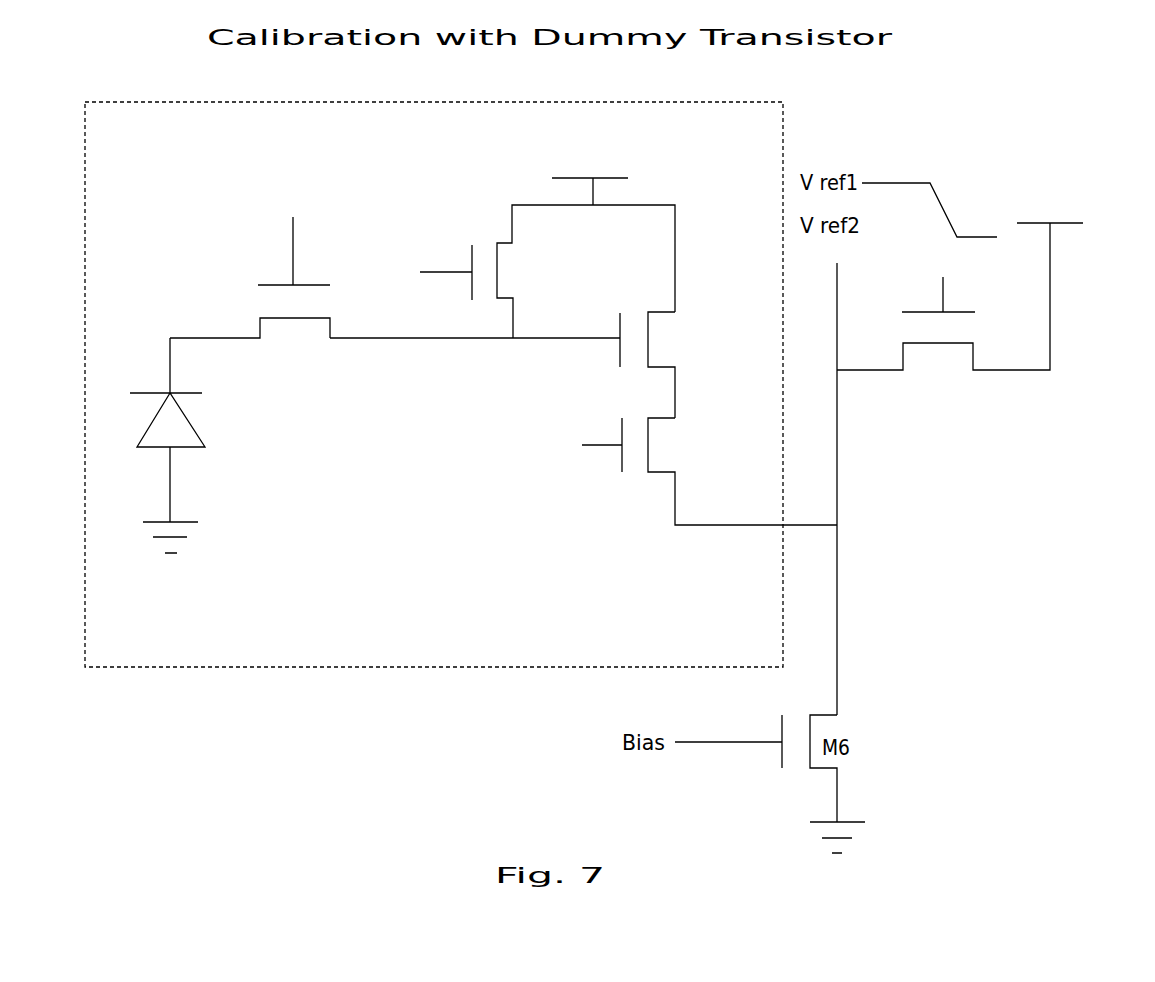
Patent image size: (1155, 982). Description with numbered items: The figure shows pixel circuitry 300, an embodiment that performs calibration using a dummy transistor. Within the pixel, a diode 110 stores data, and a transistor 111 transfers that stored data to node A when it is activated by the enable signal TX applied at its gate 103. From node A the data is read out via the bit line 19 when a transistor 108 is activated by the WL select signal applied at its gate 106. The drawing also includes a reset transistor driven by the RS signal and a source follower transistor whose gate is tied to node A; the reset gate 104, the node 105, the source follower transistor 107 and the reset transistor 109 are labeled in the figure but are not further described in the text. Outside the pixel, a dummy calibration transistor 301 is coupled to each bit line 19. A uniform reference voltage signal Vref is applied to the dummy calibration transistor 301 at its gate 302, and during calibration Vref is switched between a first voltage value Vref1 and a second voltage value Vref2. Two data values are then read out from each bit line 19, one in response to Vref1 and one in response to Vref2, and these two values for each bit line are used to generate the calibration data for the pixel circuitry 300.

The bit line 19 is at (837, 498).
The gate 103 is at (293, 263).
The reset gate RS of transistor M3 104 is at (447, 272).
The sense node A 105 is at (512, 338).
The gate 106 is at (602, 447).
The source follower transistor M1 107 is at (692, 333).
The transistor 108 is at (697, 443).
The reset transistor M3 109 is at (538, 268).
The diode 110 is at (192, 425).
The transistor 111 is at (307, 342).
The pixel circuitry 300 is at (782, 133).
The dummy calibration transistor 301 is at (955, 373).
The gate 302 is at (943, 302).